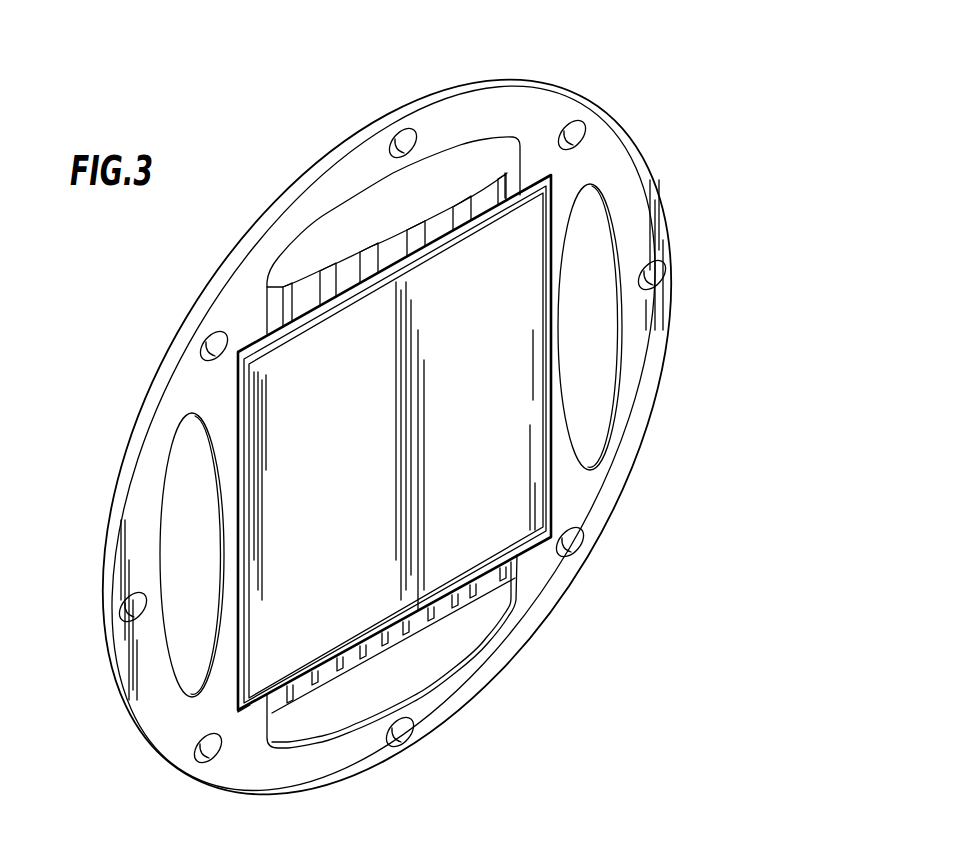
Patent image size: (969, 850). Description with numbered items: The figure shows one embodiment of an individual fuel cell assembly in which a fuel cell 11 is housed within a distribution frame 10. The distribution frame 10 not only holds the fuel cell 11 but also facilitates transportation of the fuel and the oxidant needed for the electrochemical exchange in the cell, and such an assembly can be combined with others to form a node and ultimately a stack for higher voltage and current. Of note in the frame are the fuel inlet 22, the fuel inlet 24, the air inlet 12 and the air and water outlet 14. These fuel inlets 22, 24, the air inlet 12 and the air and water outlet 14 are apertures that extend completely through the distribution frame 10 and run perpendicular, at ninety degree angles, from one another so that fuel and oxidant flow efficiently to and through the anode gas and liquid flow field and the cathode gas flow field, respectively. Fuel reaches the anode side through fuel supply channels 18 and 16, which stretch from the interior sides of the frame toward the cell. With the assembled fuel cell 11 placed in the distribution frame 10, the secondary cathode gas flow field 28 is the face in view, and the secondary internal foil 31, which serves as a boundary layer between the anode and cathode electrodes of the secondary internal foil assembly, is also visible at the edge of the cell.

The distribution frame 10 is at (672, 150).
The fuel cell 11 is at (250, 405).
The air inlet 12 is at (445, 172).
The air and water outlet 14 is at (400, 673).
The fuel supply channel 16 is at (447, 617).
The fuel supply channel 18 is at (462, 196).
The fuel inlet 22 is at (598, 392).
The fuel inlet 24 is at (184, 551).
The secondary cathode gas flow field 28 is at (507, 507).
The secondary internal foil 31 is at (230, 698).